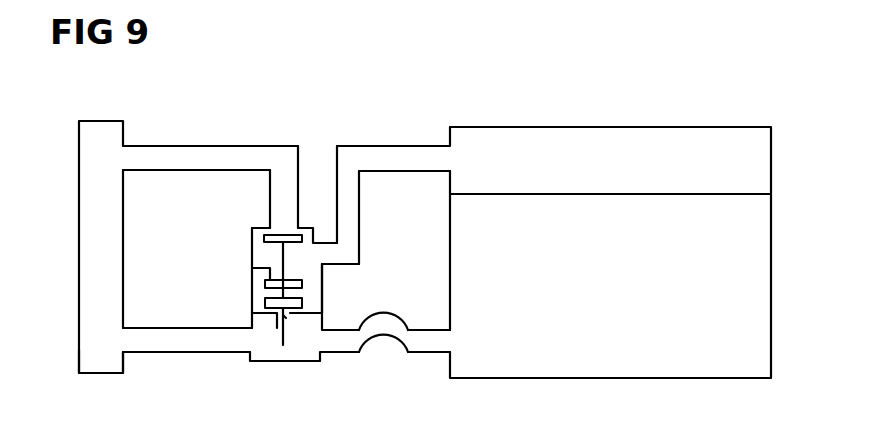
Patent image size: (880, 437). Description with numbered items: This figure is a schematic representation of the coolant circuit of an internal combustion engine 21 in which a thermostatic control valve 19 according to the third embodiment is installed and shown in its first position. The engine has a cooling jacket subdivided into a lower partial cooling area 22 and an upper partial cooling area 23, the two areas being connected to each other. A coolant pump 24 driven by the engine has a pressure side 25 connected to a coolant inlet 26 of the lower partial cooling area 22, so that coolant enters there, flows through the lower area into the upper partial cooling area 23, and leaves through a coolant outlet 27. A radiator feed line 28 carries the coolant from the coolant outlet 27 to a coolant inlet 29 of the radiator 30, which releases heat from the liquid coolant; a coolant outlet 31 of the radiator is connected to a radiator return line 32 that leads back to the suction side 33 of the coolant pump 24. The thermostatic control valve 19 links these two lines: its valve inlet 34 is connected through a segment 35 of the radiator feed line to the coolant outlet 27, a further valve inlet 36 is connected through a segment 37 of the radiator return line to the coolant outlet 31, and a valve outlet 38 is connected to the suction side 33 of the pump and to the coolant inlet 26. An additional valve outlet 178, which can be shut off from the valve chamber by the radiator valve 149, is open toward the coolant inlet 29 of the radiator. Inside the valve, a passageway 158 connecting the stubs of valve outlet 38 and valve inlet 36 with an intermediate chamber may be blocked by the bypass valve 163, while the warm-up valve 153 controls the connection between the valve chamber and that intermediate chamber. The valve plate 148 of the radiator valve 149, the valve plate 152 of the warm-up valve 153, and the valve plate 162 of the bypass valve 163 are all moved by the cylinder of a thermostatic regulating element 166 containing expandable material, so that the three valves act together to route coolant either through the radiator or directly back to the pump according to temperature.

The thermostatic control valve 19 is at (250, 263).
The internal combustion engine 21 is at (628, 380).
The lower partial cooling area 22 is at (697, 337).
The upper partial cooling area 23 is at (583, 147).
The coolant pump 24 is at (388, 351).
The pressure side 25 is at (428, 323).
The coolant inlet 26 is at (448, 341).
The coolant outlet 27 is at (446, 161).
The radiator feed line 28 is at (357, 139).
The coolant inlet of the radiator 29 is at (126, 158).
The radiator 30 is at (79, 227).
The coolant outlet of the radiator 31 is at (123, 342).
The radiator return line 32 is at (199, 360).
The suction side 33 is at (322, 330).
The valve inlet 34 is at (329, 262).
The segment of the radiator feed line 35 is at (401, 160).
The valve inlet 36 is at (248, 338).
The segment of the radiator return line 37 is at (155, 337).
The valve outlet 38 is at (330, 353).
The valve plate 148 is at (272, 233).
The radiator valve 149 is at (265, 234).
The valve plate 152 is at (267, 302).
The warm-up valve 153 is at (266, 283).
The passageway 158 is at (280, 328).
The valve plate 162 is at (303, 304).
The bypass valve 163 is at (288, 320).
The thermostatic regulating element 166 is at (310, 239).
The valve outlet 178 is at (284, 226).